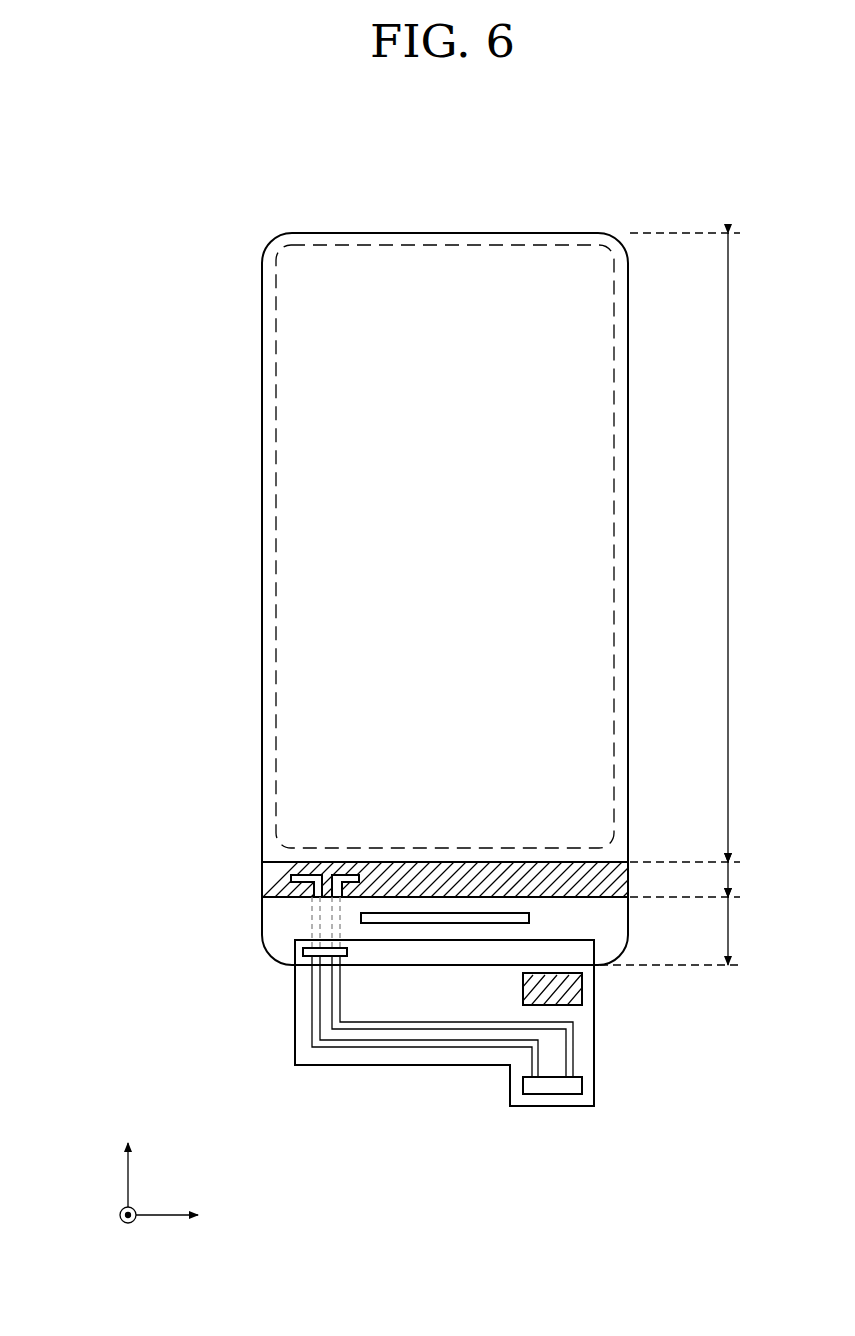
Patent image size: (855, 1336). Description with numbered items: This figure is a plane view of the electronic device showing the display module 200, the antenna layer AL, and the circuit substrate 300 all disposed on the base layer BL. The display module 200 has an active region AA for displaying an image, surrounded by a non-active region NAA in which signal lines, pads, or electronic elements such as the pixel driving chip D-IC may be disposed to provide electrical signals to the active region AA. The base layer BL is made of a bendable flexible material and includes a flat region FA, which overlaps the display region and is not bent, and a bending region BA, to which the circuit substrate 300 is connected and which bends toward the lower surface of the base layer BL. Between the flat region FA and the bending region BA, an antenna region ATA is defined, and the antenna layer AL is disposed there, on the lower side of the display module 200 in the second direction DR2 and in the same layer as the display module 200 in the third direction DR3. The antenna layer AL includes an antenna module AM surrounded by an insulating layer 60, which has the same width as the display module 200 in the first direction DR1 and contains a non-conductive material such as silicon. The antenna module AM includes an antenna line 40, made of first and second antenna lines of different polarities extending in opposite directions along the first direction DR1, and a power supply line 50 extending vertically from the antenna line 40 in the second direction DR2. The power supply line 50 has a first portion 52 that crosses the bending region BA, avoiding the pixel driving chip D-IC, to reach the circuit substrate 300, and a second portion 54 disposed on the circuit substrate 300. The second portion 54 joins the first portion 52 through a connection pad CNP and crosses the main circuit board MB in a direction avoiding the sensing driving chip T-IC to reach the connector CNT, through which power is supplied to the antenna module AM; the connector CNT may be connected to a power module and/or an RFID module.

The display module 200 is at (288, 446).
The active region AA is at (293, 332).
The non-active region NAA is at (270, 296).
The antenna layer AL is at (92, 863).
The insulating layer 60 is at (277, 870).
The antenna module AM is at (147, 895).
The antenna line 40 is at (288, 878).
The power supply line 50 is at (195, 912).
The first portion 52 is at (313, 919).
The second portion 54 is at (317, 995).
The connection pad CNP is at (347, 953).
The pixel driving chip D-IC is at (530, 918).
The base layer BL is at (610, 940).
The circuit substrate 300 is at (685, 980).
The main circuit board MB is at (583, 1040).
The sensing driving chip T-IC is at (578, 988).
The connector CNT is at (575, 1085).
The flat region FA is at (695, 547).
The antenna region ATA is at (702, 879).
The bending region BA is at (682, 931).
The first direction DR1 is at (192, 1214).
The second direction DR2 is at (131, 1163).
The third direction DR3 is at (131, 1229).